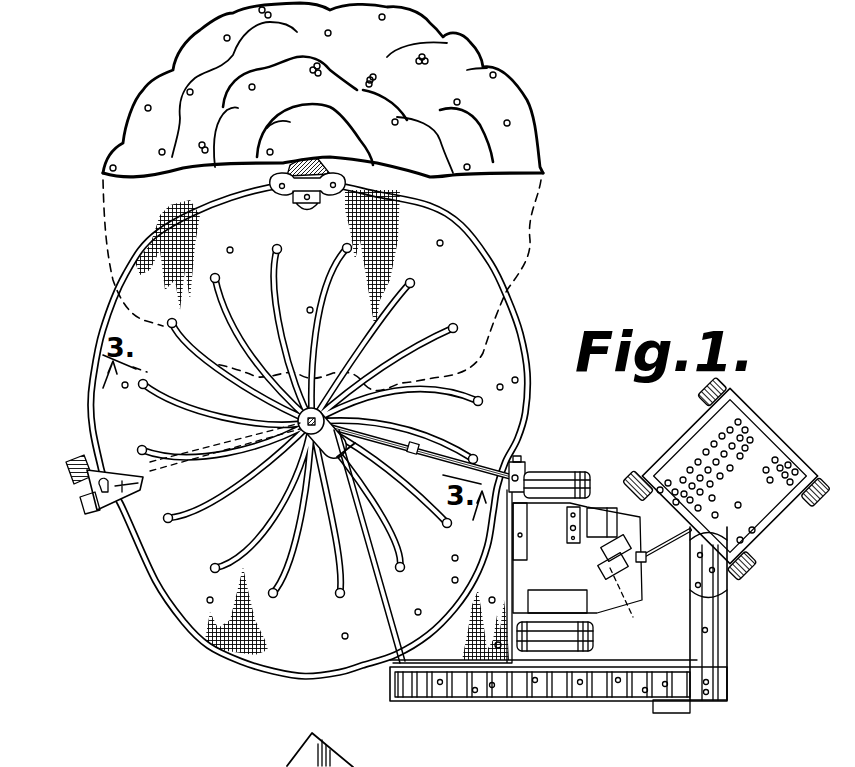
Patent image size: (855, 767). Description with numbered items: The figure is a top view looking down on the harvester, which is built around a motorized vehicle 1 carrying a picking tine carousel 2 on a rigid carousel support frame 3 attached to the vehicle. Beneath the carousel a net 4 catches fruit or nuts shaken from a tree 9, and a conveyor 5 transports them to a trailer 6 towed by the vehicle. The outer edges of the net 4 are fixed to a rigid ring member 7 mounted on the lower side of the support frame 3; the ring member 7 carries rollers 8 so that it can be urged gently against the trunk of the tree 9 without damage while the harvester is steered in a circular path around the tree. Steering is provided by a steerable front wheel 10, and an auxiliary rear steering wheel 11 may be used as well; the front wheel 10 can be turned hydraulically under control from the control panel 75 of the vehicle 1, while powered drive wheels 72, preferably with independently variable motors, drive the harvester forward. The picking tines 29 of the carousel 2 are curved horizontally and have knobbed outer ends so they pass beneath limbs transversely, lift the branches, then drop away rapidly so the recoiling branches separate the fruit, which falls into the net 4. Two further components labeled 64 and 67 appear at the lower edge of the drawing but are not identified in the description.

The motorized vehicle 1 is at (530, 572).
The picking tine carousel 2 is at (329, 566).
The rigid carousel support frame 3 is at (364, 592).
The net 4 is at (250, 244).
The conveyor 5 is at (550, 695).
The trailer 6 is at (737, 520).
The rigid ring member 7 is at (514, 313).
The rollers 8 is at (346, 182).
The tree 9 is at (455, 67).
The steerable front wheel 10 is at (68, 480).
The auxiliary rear steering wheel 11 is at (633, 617).
The picking tines 29 is at (422, 335).
The hopper 64 is at (350, 763).
The element 67 is at (417, 765).
The powered drive wheels 72 is at (553, 477).
The control panel 75 is at (578, 513).